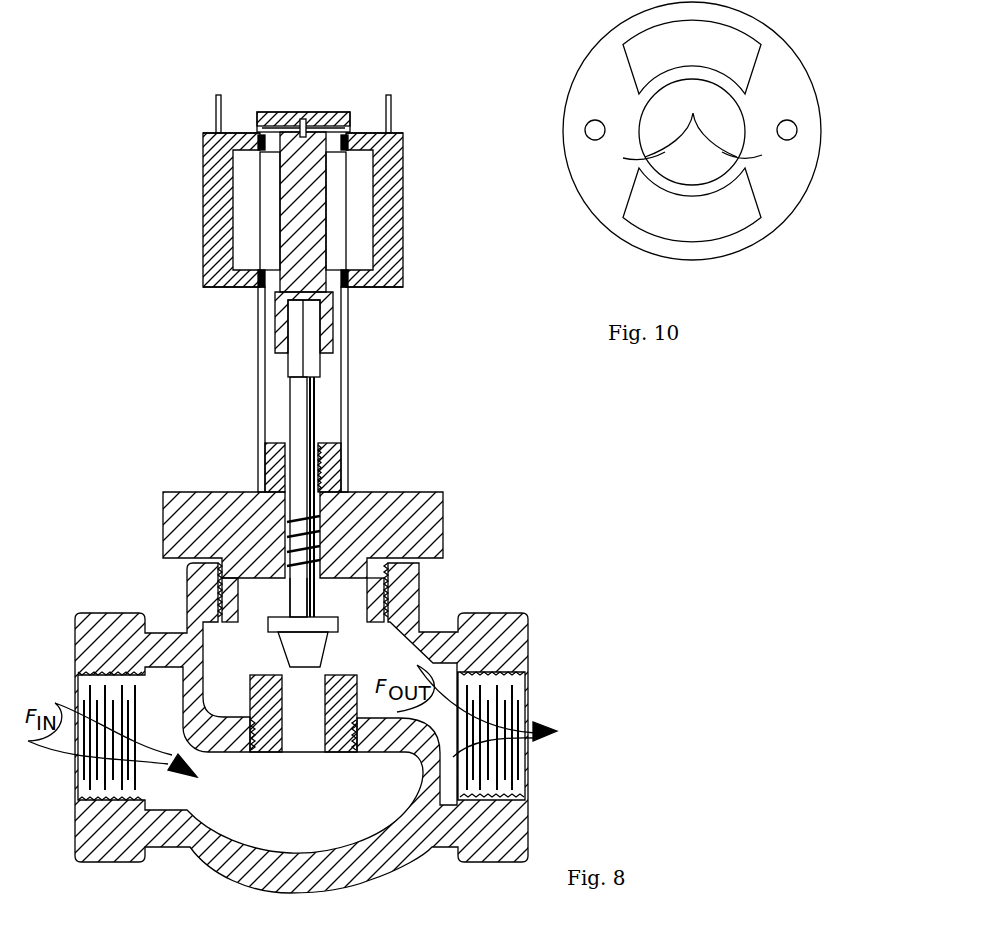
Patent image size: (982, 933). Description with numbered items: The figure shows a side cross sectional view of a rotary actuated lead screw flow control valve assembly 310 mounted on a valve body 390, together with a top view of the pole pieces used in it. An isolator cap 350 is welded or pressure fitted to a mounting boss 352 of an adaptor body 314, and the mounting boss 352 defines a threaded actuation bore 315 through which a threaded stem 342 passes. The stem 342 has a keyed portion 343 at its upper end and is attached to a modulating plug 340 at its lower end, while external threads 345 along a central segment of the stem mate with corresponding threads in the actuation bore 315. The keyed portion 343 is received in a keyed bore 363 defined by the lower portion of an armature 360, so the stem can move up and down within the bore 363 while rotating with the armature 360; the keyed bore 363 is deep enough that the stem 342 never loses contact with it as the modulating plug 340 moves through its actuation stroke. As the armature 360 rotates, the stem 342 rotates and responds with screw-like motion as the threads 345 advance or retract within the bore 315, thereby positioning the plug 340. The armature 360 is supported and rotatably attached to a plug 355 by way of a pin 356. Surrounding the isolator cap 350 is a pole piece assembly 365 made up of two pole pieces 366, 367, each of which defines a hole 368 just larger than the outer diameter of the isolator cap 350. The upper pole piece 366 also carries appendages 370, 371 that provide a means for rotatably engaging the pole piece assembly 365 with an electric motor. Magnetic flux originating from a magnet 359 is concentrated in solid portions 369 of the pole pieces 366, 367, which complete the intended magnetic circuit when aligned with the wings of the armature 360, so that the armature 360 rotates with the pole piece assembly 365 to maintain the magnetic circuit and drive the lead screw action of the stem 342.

In FIG. 8, the flow control valve assembly 310 is at (432, 347).
In FIG. 8, the adaptor body 314 is at (443, 500).
In FIG. 8, the threaded actuation bore 315 is at (315, 436).
In FIG. 8, the modulating plug 340 is at (268, 622).
In FIG. 8, the threaded stem 342 is at (250, 518).
In FIG. 8, the keyed portion 343 is at (290, 370).
In FIG. 8, the external threads 345 is at (318, 597).
In FIG. 8, the isolator cap 350 is at (348, 378).
In FIG. 8, the mounting boss 352 is at (343, 457).
In FIG. 8, the plug 355 is at (281, 112).
In FIG. 8, the pin 356 is at (307, 116).
In FIG. 8, the magnet 359 is at (203, 192).
In FIG. 8, the armature 360 is at (272, 213).
In FIG. 8, the keyed bore 363 is at (282, 322).
In FIG. 8, the pole piece assembly 365 is at (403, 210).
In FIG. 8, the pole piece 366 is at (403, 142).
In FIG. 10, the pole piece 366 is at (790, 253).
In FIG. 8, the pole piece 367 is at (380, 287).
In FIG. 10, the hole 368 is at (640, 118).
In FIG. 10, the solid portions 369 is at (692, 132).
In FIG. 8, the appendage 370 is at (391, 98).
In FIG. 10, the appendage 370 is at (795, 140).
In FIG. 8, the appendage 371 is at (216, 98).
In FIG. 10, the appendage 371 is at (588, 138).
In FIG. 8, the valve body 390 is at (530, 600).